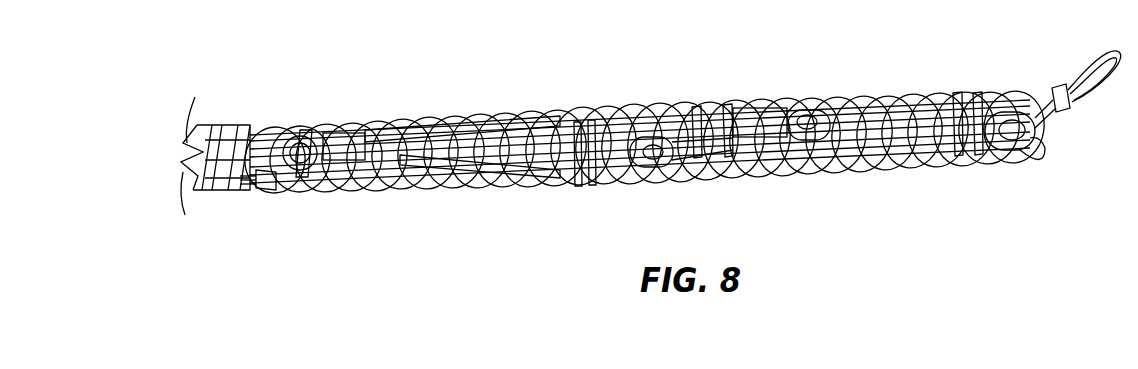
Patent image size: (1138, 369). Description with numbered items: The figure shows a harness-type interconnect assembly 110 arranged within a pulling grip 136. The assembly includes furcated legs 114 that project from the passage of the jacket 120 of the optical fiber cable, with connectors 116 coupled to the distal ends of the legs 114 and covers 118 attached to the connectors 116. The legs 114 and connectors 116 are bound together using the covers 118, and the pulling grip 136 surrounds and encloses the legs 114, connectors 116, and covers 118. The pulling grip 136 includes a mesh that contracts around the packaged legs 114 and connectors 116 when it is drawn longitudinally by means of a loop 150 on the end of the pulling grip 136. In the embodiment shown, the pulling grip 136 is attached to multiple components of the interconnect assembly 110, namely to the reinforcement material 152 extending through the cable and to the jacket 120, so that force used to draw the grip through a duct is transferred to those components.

The interconnect assembly 110 is at (436, 232).
The furcated legs 114 is at (577, 127).
The connectors 116 is at (390, 148).
The covers 118 is at (343, 150).
The jacket 120 is at (198, 178).
The pulling grip 136 is at (843, 170).
The loop 150 is at (1093, 48).
The reinforcement material 152 is at (245, 188).